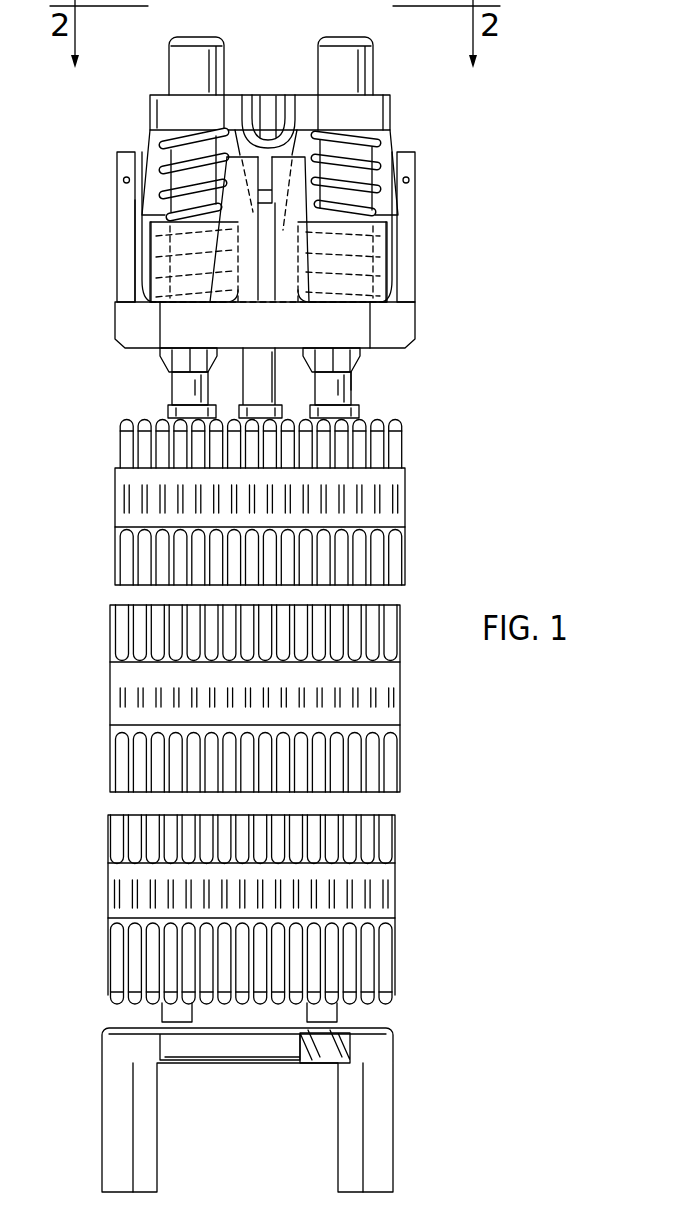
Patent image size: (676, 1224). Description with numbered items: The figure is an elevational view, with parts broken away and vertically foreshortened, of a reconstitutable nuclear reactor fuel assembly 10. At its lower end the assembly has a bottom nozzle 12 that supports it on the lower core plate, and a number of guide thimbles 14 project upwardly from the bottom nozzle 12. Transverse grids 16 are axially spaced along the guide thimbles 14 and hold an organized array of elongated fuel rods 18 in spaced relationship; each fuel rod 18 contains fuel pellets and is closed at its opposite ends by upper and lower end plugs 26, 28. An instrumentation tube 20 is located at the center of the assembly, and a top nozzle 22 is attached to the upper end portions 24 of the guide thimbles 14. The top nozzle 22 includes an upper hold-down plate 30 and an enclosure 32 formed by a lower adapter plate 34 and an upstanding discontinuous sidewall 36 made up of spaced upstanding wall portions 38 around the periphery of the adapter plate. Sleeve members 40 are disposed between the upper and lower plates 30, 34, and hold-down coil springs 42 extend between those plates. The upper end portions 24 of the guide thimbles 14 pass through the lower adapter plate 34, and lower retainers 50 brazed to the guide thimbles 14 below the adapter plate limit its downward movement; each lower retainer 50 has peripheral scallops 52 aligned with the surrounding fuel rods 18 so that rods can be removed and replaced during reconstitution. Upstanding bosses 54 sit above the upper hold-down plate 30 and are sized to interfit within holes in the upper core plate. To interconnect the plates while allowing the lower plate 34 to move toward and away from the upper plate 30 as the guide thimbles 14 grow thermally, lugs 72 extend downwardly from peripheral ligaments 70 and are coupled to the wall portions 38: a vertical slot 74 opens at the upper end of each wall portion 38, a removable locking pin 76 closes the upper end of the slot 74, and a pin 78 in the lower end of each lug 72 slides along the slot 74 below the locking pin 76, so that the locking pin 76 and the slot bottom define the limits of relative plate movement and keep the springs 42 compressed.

The fuel assembly 10 is at (470, 436).
The bottom nozzle 12 is at (393, 1096).
The guide thimbles 14 is at (162, 410).
The transverse grids 16 is at (405, 500).
The fuel rods 18 is at (127, 840).
The instrumentation tube 20 is at (260, 365).
The top nozzle 22 is at (445, 136).
The upper end portions 24 is at (172, 382).
The upper end plugs 26 is at (127, 431).
The lower end plugs 28 is at (115, 995).
The upper hold-down plate 30 is at (391, 117).
The enclosure 32 is at (430, 334).
The lower adapter plate 34 is at (404, 316).
The discontinuous sidewall 36 is at (112, 288).
The upstanding wall portions 38 is at (118, 210).
The sleeve members 40 is at (142, 262).
The hold-down coil springs 42 is at (150, 232).
The lower retainers 50 is at (165, 353).
The scallops 52 is at (360, 360).
The upstanding bosses 54 is at (327, 36).
The ligaments 70 is at (232, 100).
The lugs 72 is at (288, 147).
The vertical slot 74 is at (275, 216).
The locking pin 76 is at (292, 157).
The pin 78 is at (257, 188).